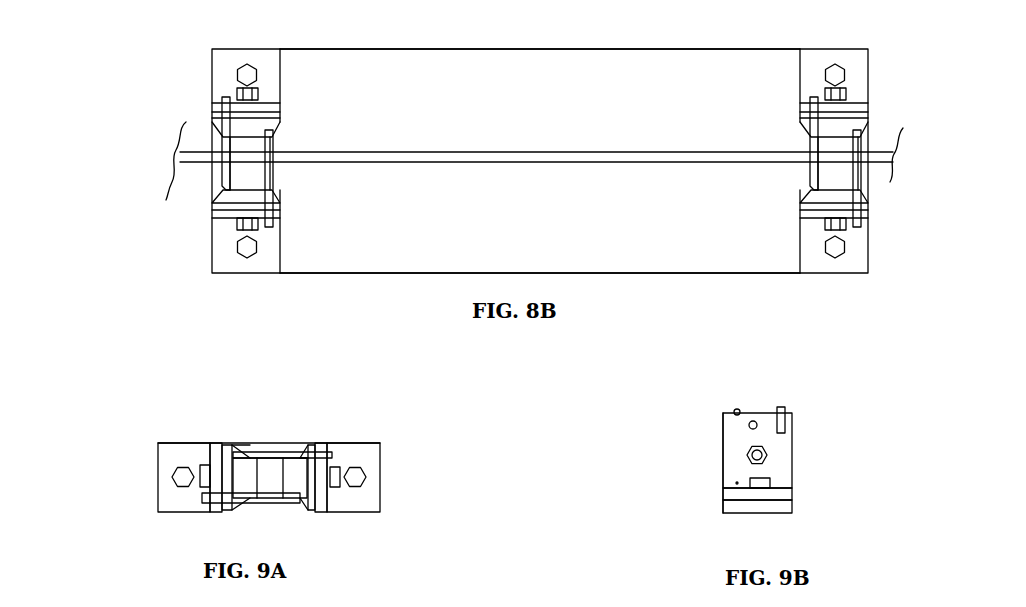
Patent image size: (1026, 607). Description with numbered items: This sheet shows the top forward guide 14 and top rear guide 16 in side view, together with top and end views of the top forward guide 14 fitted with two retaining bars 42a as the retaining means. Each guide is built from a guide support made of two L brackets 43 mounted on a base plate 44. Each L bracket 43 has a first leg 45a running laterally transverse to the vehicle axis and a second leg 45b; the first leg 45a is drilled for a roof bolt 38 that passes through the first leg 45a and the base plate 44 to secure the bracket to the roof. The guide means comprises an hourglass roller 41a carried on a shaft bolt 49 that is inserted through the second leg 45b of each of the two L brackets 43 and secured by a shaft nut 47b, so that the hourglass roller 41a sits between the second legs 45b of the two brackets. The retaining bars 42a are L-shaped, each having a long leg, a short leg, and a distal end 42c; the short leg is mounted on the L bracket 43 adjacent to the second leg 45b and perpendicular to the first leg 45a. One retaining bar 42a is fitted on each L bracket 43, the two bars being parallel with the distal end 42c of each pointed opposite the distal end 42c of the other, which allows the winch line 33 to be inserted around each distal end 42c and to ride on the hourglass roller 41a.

In FIG. 8B, the top forward guide 14 is at (757, 140).
In FIG. 9A, the top forward guide 14 is at (103, 363).
In FIG. 8B, the top rear guide 16 is at (315, 135).
In FIG. 8B, the winch line 33 is at (484, 152).
In FIG. 8B, the roof bolt 38 is at (251, 65).
In FIG. 9A, the roof bolt 38 is at (170, 483).
In FIG. 9B, the roof bolt 38 is at (767, 478).
In FIG. 9A, the hourglass roller 41a is at (268, 462).
In FIG. 8B, the retaining bar 42a is at (230, 133).
In FIG. 9A, the retaining bar 42a is at (258, 490).
In FIG. 9B, the retaining bar 42a is at (731, 408).
In FIG. 8B, the distal end 42c is at (280, 118).
In FIG. 9A, the distal end 42c is at (205, 455).
In FIG. 9B, the distal end 42c is at (739, 409).
In FIG. 9A, the L bracket 43 is at (183, 378).
In FIG. 9B, the L bracket 43 is at (560, 440).
In FIG. 8B, the base plate 44 is at (600, 227).
In FIG. 9B, the base plate 44 is at (795, 505).
In FIG. 9A, the first leg 45a is at (172, 441).
In FIG. 9B, the first leg 45a is at (722, 493).
In FIG. 9A, the second leg 45b is at (213, 440).
In FIG. 9B, the second leg 45b is at (722, 443).
In FIG. 9B, the shaft nut 47b is at (768, 452).
In FIG. 9B, the shaft bolt 49 is at (758, 452).